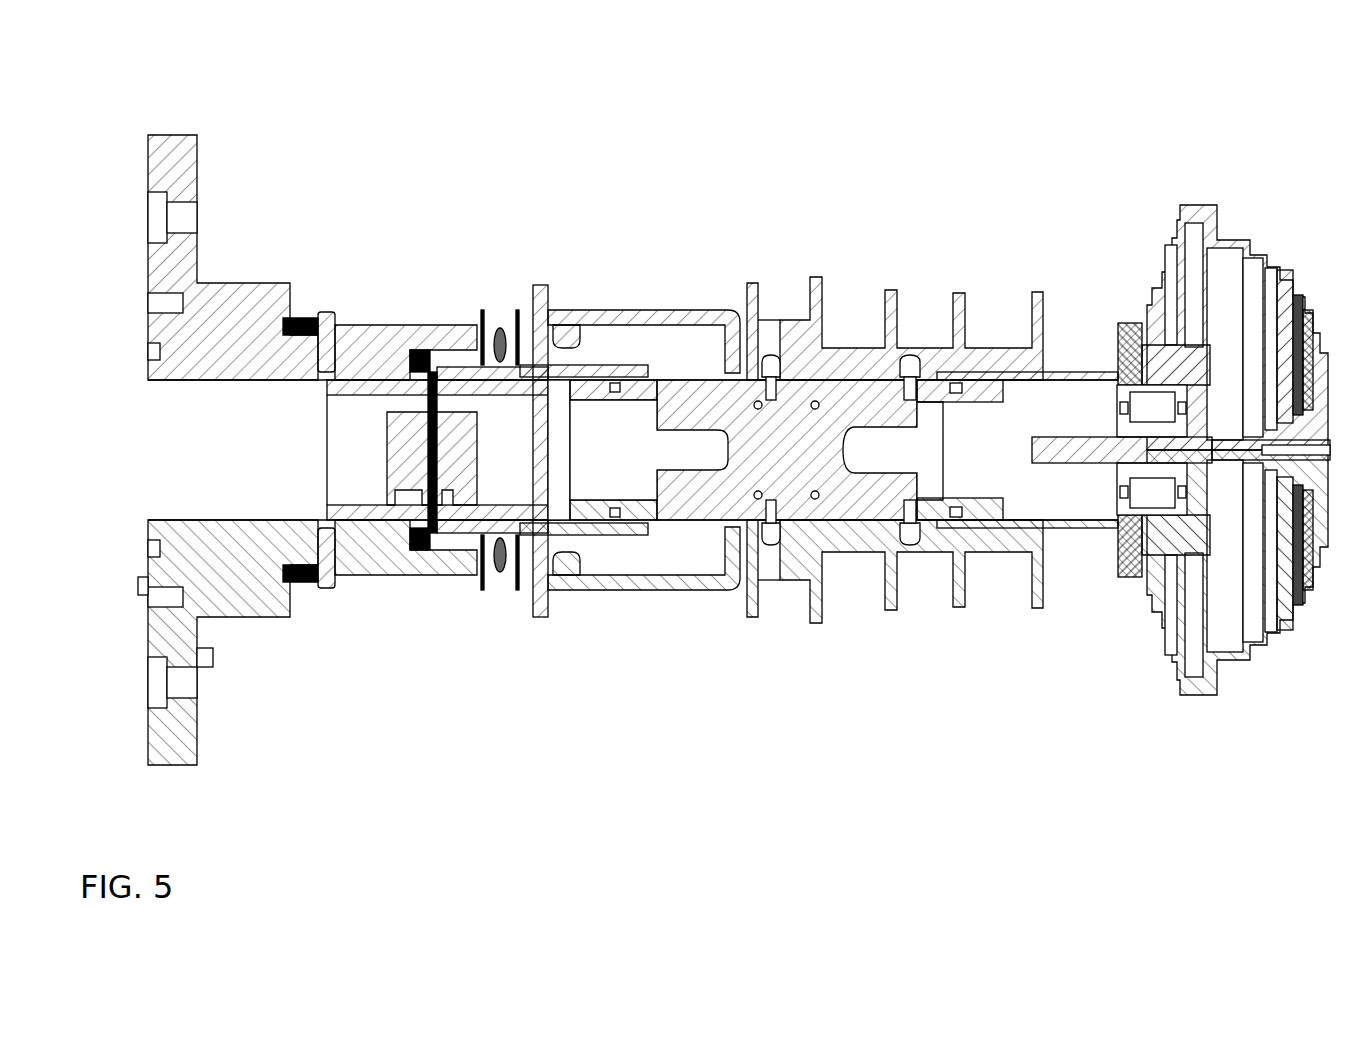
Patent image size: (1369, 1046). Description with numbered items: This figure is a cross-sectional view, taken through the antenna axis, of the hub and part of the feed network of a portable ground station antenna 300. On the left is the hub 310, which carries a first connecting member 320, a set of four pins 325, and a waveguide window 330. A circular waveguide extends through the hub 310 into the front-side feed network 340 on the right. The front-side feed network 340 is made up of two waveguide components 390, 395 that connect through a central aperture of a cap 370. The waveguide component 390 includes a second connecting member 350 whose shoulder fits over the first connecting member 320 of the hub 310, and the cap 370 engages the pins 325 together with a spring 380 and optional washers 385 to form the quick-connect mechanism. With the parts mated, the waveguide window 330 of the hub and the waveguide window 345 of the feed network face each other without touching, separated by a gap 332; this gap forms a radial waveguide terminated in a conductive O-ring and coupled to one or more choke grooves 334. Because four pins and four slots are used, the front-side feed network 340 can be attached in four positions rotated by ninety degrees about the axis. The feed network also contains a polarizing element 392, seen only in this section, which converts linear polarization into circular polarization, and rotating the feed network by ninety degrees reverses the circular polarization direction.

The portable ground station antenna 300 is at (176, 50).
The hub 310 is at (435, 120).
The first connecting member 320 is at (398, 492).
The pins 325 is at (323, 308).
The waveguide window 330 is at (423, 492).
The gap 332 is at (425, 535).
The choke grooves 334 is at (443, 537).
The front-side feed network 340 is at (1347, 180).
The waveguide window 345 is at (472, 537).
The second connecting member 350 is at (387, 323).
The cap 370 is at (575, 593).
The spring 380 is at (503, 547).
The washers 385 is at (513, 327).
The waveguide component 390 is at (608, 590).
The polarizing element 392 is at (837, 503).
The waveguide component 395 is at (985, 555).